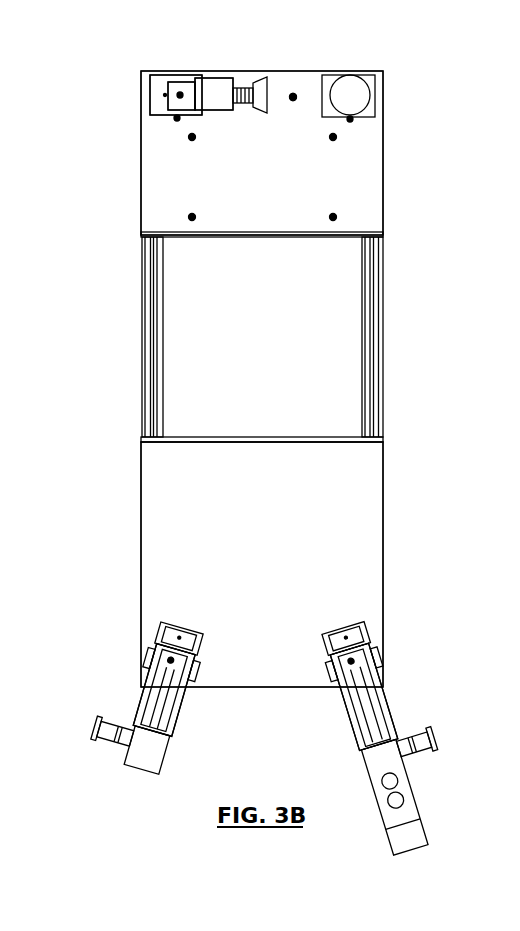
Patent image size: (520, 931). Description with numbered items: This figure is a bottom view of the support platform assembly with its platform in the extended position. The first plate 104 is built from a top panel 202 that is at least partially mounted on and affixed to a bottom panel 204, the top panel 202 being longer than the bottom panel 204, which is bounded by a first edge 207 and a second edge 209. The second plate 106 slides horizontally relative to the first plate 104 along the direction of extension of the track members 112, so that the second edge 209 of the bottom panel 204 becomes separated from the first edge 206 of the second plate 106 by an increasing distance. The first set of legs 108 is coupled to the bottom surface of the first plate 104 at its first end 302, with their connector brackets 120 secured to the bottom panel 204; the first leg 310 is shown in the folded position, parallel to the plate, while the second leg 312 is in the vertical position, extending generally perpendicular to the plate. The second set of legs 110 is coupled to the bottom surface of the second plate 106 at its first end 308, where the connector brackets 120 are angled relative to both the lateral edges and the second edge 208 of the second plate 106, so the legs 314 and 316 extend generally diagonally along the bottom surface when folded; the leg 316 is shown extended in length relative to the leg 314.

The first plate 104 is at (172, 190).
The bottom panel 204 is at (347, 188).
The second edge of the bottom panel 209 is at (262, 232).
The first edge of the second plate 206 is at (275, 443).
The top panel 202 is at (218, 341).
The track members 112 is at (378, 350).
The second plate 106 is at (158, 557).
The second edge of the second plate 208 is at (275, 687).
The first end of the first plate 302 is at (205, 76).
The first leg 310 is at (158, 95).
The first set of legs 108 is at (348, 80).
The first edge of the bottom panel 207 is at (290, 80).
The second leg 312 is at (352, 97).
The first end of the second plate 308 is at (218, 685).
The leg 314 is at (145, 780).
The connector brackets 120 is at (363, 623).
The leg 316 is at (408, 800).
The second set of legs 110 is at (350, 713).